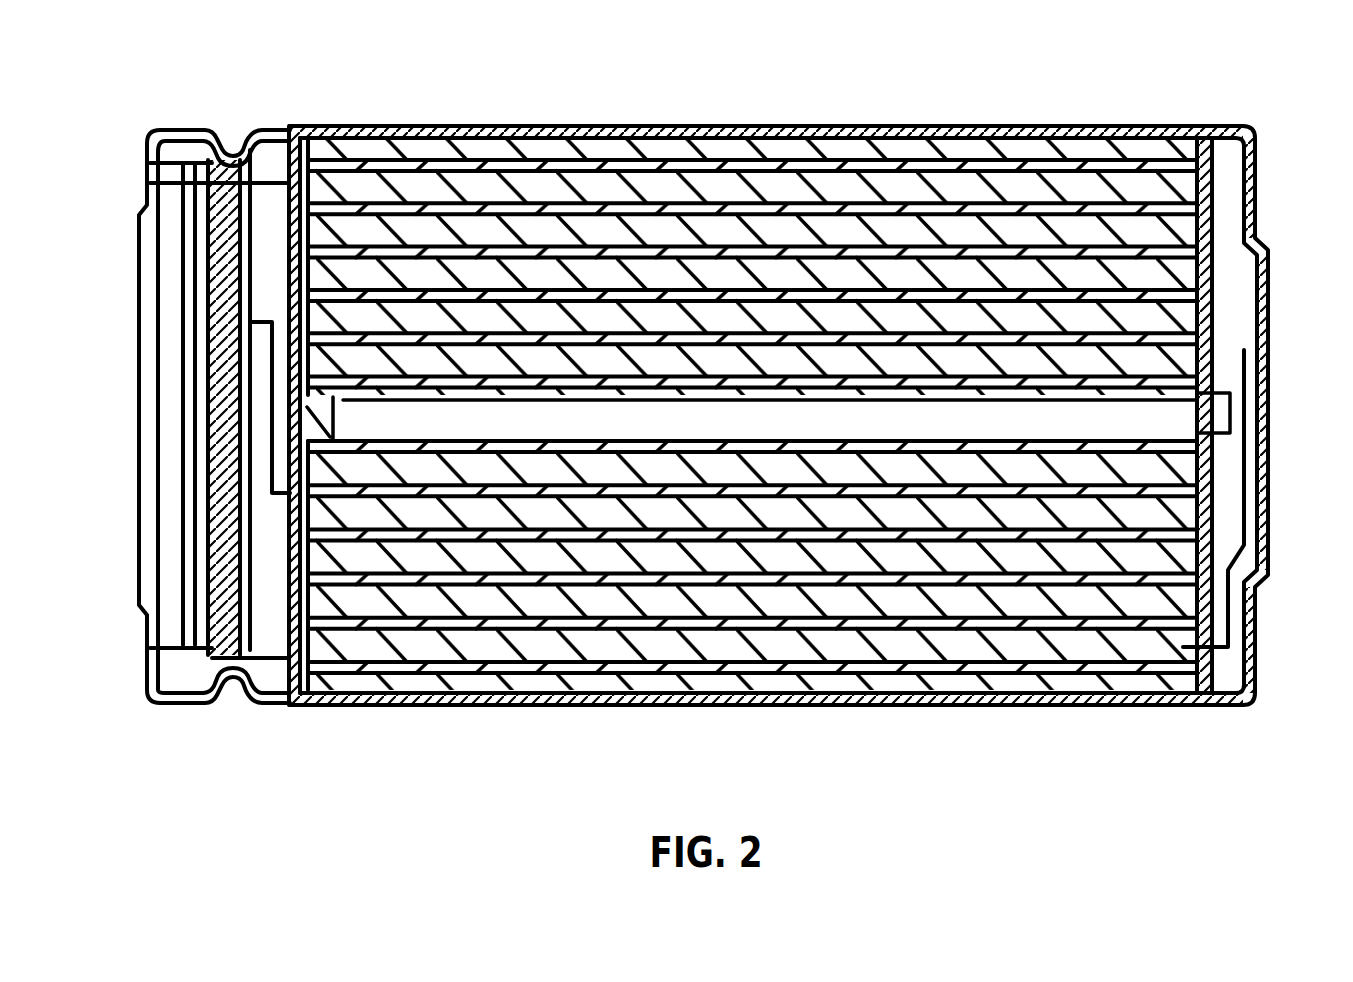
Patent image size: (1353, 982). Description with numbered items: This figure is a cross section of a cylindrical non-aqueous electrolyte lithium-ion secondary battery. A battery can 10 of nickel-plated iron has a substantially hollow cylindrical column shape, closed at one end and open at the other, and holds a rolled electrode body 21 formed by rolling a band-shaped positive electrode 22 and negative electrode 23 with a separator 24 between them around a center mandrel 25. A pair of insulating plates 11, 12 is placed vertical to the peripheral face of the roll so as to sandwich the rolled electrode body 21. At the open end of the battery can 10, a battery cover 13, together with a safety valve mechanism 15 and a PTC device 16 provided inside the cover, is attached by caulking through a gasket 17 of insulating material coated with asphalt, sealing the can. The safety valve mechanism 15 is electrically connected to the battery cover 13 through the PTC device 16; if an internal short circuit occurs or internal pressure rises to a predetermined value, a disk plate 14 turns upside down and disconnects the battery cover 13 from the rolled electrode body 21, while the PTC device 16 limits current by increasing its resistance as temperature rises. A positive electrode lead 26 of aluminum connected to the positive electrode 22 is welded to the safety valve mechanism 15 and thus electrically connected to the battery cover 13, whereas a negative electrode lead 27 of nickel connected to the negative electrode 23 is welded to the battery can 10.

The battery can 10 is at (440, 130).
The insulating plate 11 is at (294, 127).
The insulating plate 12 is at (1208, 132).
The battery cover 13 is at (141, 572).
The disk plate 14 is at (188, 350).
The safety valve mechanism 15 is at (194, 252).
The PTC device 16 is at (200, 129).
The gasket 17 is at (252, 128).
The rolled electrode body 21 is at (526, 158).
The positive electrode 22 is at (610, 225).
The negative electrode 23 is at (665, 190).
The separator 24 is at (723, 210).
The center mandrel 25 is at (792, 420).
The positive electrode lead 26 is at (216, 428).
The negative electrode lead 27 is at (1266, 537).